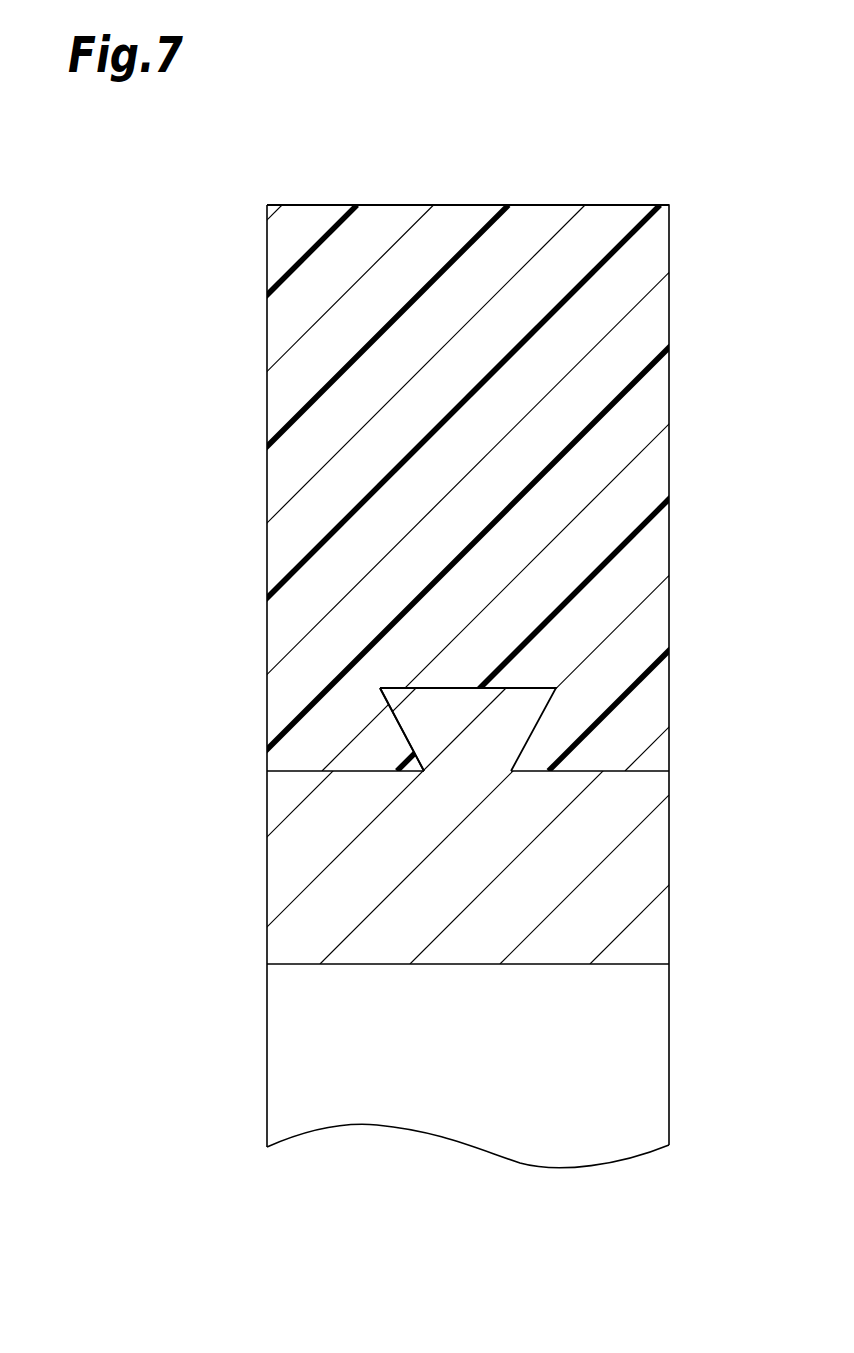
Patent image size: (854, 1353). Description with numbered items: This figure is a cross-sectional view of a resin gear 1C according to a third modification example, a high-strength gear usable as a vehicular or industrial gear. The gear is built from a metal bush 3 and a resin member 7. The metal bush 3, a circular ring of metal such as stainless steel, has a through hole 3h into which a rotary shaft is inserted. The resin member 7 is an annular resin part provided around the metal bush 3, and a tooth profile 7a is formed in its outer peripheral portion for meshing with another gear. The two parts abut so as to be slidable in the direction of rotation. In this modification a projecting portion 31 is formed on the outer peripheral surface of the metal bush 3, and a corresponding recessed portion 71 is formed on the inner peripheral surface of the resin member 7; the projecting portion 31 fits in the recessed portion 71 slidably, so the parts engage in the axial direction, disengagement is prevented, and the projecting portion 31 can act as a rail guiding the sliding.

The resin gear 1C is at (183, 234).
The resin member 7 is at (653, 392).
The tooth profile 7a is at (648, 205).
The recessed portion 71 is at (515, 688).
The projecting portion 31 is at (427, 733).
The metal bush 3 is at (653, 858).
The through hole 3h is at (598, 1077).